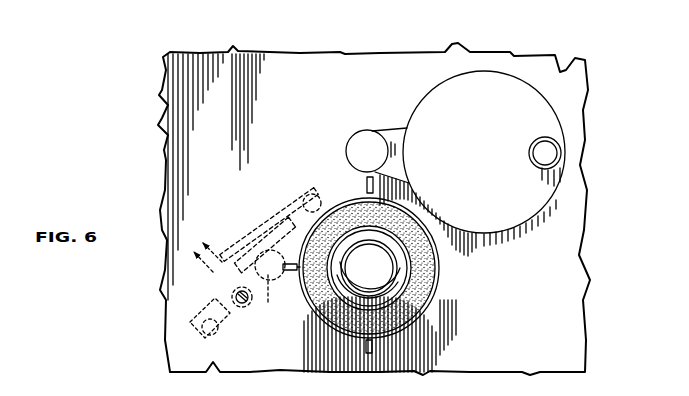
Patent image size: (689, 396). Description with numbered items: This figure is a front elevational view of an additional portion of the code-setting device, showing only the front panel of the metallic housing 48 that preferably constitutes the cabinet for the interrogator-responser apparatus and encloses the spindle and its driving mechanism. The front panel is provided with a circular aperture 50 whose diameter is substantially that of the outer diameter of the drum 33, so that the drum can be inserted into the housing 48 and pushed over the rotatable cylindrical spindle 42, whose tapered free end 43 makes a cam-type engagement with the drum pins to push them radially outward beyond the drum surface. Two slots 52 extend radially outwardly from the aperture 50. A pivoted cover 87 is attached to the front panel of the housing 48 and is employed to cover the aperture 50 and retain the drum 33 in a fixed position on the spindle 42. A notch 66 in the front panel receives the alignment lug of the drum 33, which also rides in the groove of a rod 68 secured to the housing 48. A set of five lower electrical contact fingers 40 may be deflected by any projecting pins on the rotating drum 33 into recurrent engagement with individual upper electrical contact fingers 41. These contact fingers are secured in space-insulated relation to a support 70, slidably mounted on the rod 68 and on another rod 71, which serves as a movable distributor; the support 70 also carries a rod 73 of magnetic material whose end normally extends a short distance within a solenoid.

The housing 48 is at (160, 68).
The pivoted cover 87 is at (418, 102).
The slots 52 is at (367, 184).
The drum 33 is at (408, 305).
The rotatable cylindrical spindle 42 is at (393, 242).
The circular aperture 50 is at (413, 265).
The tapered free end 43 is at (404, 282).
The upper electrical contact fingers 41 is at (270, 212).
The lower electrical contact fingers 40 is at (304, 198).
The notch 66 is at (274, 282).
The rod 68 is at (271, 298).
The rod 71 is at (243, 309).
The support 70 is at (213, 303).
The rod of magnetic material 73 is at (207, 334).